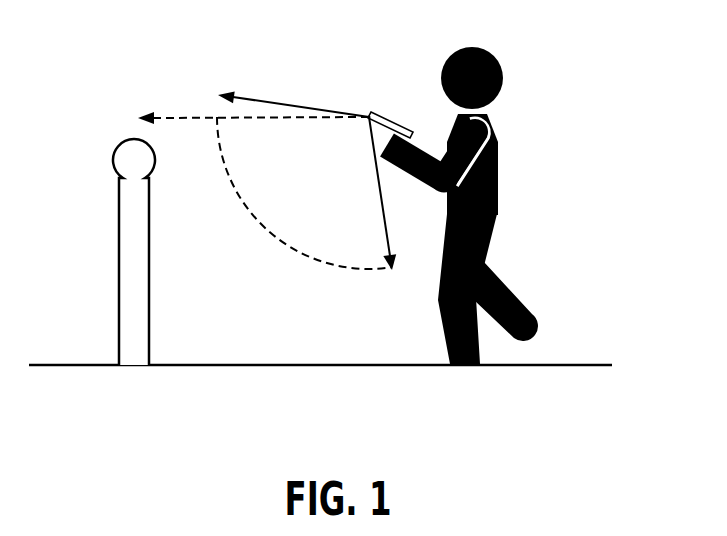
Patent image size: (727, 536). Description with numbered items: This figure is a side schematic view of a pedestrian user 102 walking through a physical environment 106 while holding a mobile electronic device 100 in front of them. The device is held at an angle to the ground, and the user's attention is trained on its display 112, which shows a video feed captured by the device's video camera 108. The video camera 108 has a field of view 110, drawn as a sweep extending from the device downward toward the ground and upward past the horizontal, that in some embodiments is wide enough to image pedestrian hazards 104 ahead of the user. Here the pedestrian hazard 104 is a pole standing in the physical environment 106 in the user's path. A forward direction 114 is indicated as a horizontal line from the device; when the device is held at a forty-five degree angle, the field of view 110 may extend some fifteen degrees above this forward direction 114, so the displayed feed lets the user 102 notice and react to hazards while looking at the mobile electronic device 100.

The mobile electronic device 100 is at (378, 102).
The user 102 is at (541, 143).
The pedestrian hazard 104 is at (150, 257).
The physical environment 106 is at (230, 331).
The video camera 108 is at (369, 118).
The field of view 110 is at (253, 216).
The display 112 is at (397, 130).
The forward direction 114 is at (176, 117).